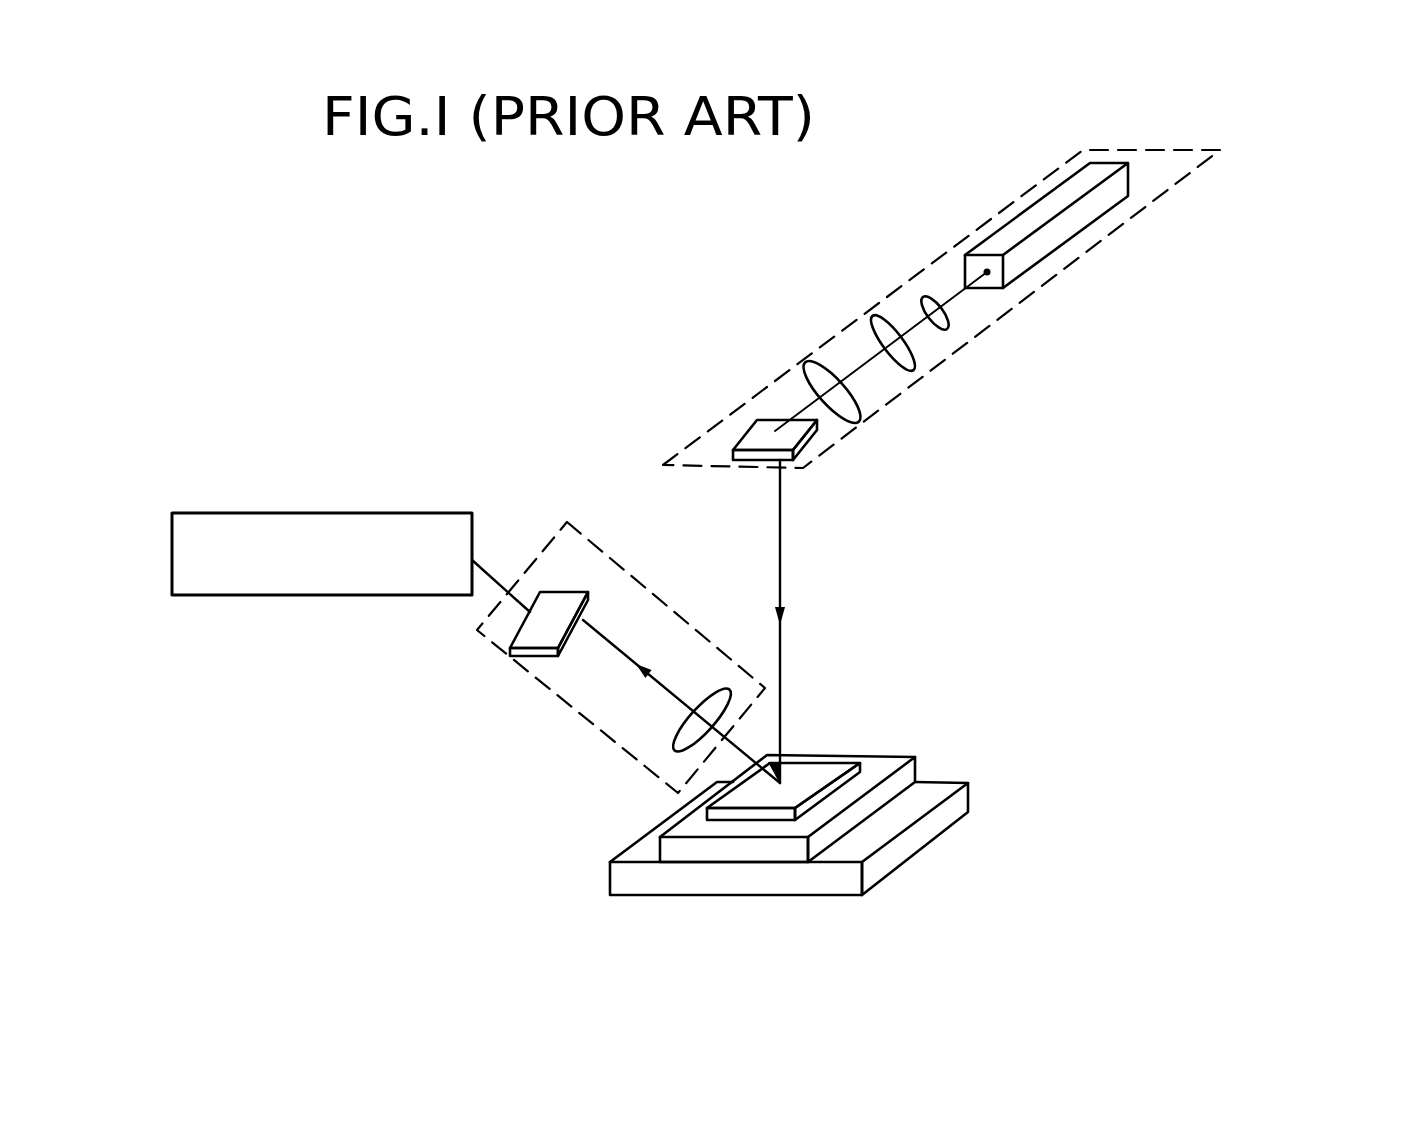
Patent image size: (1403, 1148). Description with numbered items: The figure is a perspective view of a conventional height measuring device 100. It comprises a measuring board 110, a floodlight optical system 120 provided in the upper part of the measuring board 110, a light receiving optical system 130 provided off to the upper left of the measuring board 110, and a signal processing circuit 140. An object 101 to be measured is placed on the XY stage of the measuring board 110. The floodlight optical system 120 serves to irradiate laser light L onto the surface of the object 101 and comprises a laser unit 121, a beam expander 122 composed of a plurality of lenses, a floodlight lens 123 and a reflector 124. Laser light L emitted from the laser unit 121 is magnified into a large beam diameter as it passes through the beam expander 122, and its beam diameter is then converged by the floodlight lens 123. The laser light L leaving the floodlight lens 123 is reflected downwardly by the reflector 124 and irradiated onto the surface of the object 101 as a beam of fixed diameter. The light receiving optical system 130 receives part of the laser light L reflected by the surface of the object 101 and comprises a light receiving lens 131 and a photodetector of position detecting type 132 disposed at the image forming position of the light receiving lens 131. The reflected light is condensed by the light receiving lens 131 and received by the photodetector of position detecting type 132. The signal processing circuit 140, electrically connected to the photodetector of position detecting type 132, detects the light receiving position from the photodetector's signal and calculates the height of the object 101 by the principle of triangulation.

The height measuring device 100 is at (383, 235).
The object 101 is at (823, 768).
The measuring board 110 is at (890, 873).
The floodlight optical system 120 is at (985, 330).
The laser unit 121 is at (1067, 243).
The beam expander 122 is at (926, 292).
The floodlight lens 123 is at (860, 407).
The reflector 124 is at (750, 430).
The light receiving optical system 130 is at (590, 723).
The light receiving lens 131 is at (698, 688).
The photodetector of position detecting type 132 is at (512, 656).
The signal processing circuit 140 is at (280, 512).
The laser light L is at (783, 596).